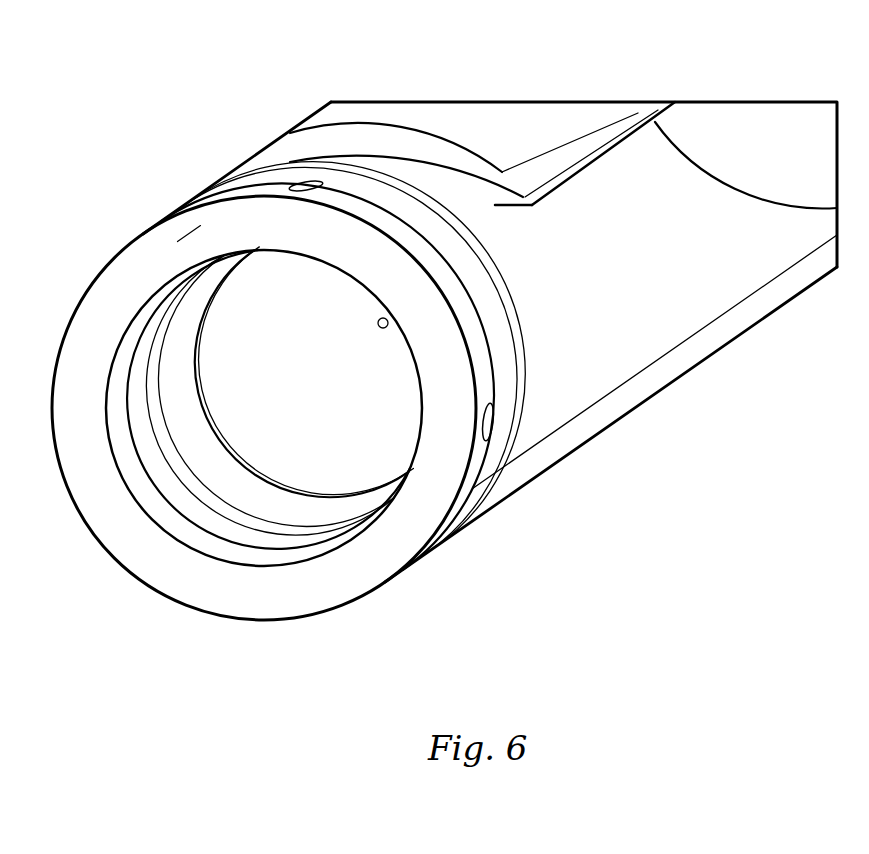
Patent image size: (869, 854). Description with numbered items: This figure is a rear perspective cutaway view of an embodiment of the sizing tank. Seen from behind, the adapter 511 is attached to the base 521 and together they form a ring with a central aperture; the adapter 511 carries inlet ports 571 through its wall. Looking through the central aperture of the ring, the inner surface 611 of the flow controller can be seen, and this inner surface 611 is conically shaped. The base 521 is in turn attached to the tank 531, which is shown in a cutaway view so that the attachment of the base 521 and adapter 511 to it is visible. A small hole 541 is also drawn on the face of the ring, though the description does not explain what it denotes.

The adapter 511 is at (233, 228).
The base 521 is at (358, 185).
The tank 531 is at (580, 197).
The pin hole 541 is at (381, 329).
The inlet ports 571 is at (493, 438).
The inner surface 611 is at (247, 300).